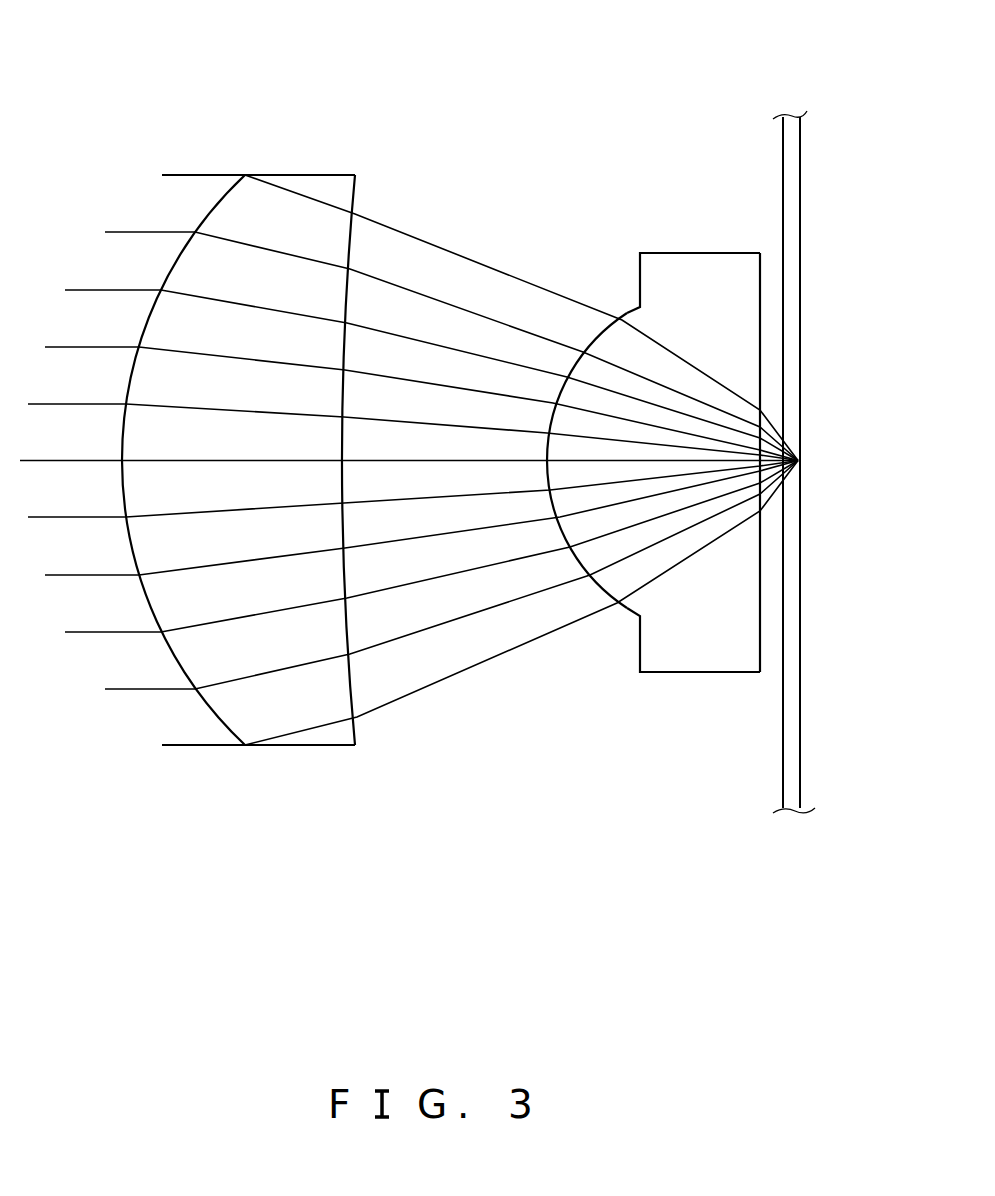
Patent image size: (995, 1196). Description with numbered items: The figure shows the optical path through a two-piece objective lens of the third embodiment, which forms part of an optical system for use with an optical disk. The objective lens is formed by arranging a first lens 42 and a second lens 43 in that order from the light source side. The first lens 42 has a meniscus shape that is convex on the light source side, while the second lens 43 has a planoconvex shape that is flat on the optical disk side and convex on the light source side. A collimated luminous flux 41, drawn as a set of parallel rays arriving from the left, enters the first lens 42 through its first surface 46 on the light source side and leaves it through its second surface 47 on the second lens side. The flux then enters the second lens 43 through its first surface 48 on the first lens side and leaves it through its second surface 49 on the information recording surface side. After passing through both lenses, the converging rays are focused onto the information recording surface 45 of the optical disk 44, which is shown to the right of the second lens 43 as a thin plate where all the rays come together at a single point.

The collimated luminous flux 41 is at (281, 392).
The first lens 42 is at (300, 174).
The second lens 43 is at (658, 380).
The optical disk 44 is at (819, 426).
The information recording surface 45 is at (800, 347).
The first surface 46 is at (215, 203).
The second surface 47 is at (353, 244).
The first surface 48 is at (627, 312).
The second surface 49 is at (762, 275).